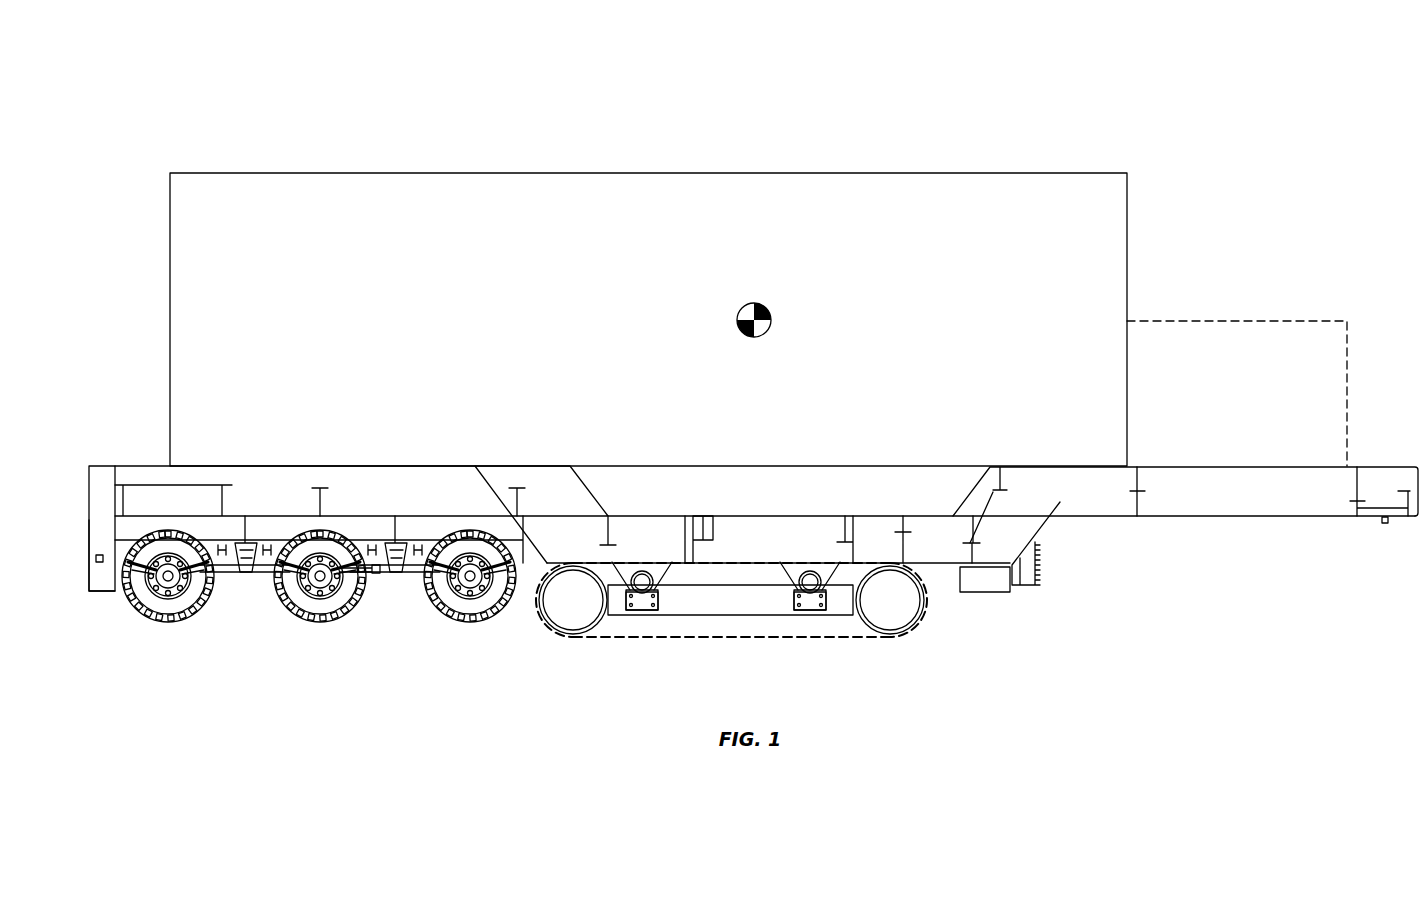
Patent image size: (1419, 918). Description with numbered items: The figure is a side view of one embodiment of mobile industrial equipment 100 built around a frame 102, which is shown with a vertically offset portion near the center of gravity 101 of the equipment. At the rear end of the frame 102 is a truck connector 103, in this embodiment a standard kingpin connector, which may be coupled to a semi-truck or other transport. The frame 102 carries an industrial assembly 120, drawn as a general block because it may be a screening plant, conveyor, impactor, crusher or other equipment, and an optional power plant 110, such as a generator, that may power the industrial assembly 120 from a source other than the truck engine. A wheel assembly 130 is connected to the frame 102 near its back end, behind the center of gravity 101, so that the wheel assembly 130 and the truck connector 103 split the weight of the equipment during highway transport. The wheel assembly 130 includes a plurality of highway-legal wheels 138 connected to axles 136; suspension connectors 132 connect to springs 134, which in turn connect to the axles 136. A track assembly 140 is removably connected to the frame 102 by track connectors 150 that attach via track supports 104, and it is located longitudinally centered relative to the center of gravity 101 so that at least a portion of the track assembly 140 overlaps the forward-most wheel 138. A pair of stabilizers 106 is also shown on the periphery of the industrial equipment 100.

The mobile industrial equipment 100 is at (195, 118).
The center of gravity 101 is at (770, 308).
The frame 102 is at (92, 458).
The truck connector 103 is at (1385, 525).
The track supports 104 is at (641, 555).
The stabilizers 106 is at (80, 536).
The power plant 110 is at (1221, 394).
The industrial assembly 120 is at (605, 302).
The wheel assembly 130 is at (145, 662).
The suspension connectors 132 is at (397, 570).
The springs 134 is at (375, 570).
The axles 136 is at (327, 582).
The wheels 138 is at (183, 617).
The track assembly 140 is at (925, 630).
The track connectors 150 is at (645, 618).